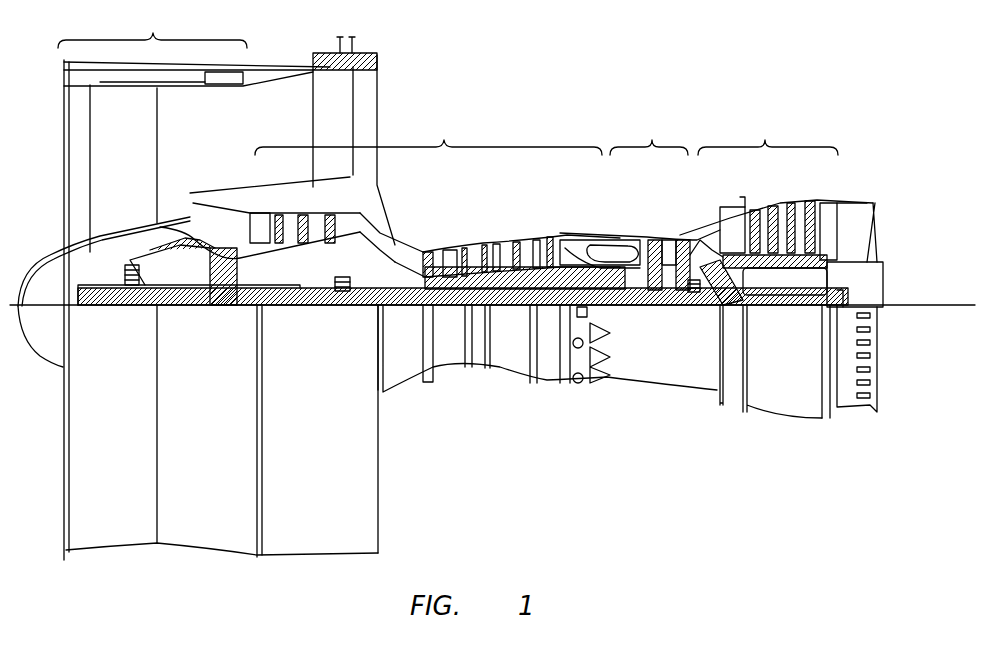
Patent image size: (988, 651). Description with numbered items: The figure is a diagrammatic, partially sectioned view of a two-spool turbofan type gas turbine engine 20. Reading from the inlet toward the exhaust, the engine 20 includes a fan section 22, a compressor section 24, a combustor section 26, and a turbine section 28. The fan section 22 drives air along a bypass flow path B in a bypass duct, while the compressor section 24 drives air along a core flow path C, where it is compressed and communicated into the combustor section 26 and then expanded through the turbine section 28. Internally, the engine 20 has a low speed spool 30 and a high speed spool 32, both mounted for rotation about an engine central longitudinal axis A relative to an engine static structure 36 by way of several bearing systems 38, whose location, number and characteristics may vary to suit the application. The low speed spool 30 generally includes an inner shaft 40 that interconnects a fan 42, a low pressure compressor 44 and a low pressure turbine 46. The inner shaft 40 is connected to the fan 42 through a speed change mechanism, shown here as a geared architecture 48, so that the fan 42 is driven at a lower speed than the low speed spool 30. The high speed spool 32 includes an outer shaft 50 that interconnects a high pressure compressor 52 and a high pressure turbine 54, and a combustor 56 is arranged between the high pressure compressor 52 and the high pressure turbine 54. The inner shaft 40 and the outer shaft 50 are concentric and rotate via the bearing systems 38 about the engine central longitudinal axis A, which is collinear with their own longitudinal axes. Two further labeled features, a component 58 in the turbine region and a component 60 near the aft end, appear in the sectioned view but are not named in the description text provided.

The gas turbine engine 20 is at (706, 103).
The fan section 22 is at (152, 24).
The compressor section 24 is at (428, 132).
The combustor section 26 is at (649, 132).
The turbine section 28 is at (768, 132).
The low speed spool 30 is at (514, 320).
The high speed spool 32 is at (550, 243).
The engine static structure 36 is at (552, 390).
The bearing systems 38 is at (135, 312).
The inner shaft 40 is at (390, 313).
The fan 42 is at (143, 163).
The low pressure compressor 44 is at (327, 212).
The low pressure turbine 46 is at (773, 203).
The geared architecture 48 is at (223, 312).
The outer shaft 50 is at (623, 307).
The high pressure compressor 52 is at (487, 247).
The high pressure turbine 54 is at (670, 233).
The combustor 56 is at (623, 238).
The mid-turbine frame 58 is at (710, 257).
The airfoils 60 is at (743, 307).
The engine central longitudinal axis A is at (921, 312).
The bypass flow path B is at (268, 132).
The core flow path C is at (217, 219).